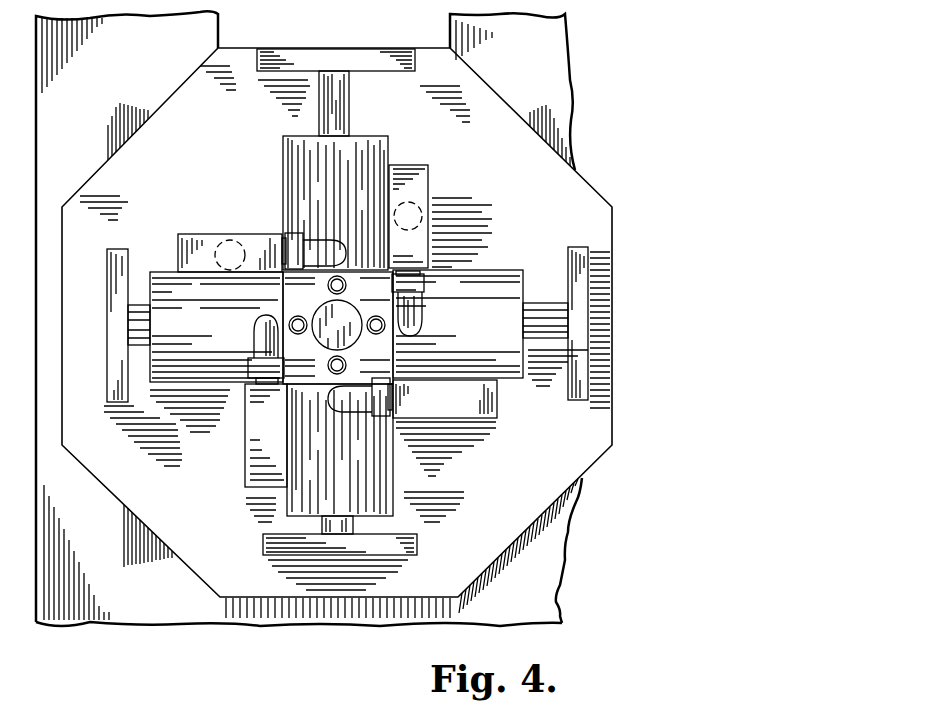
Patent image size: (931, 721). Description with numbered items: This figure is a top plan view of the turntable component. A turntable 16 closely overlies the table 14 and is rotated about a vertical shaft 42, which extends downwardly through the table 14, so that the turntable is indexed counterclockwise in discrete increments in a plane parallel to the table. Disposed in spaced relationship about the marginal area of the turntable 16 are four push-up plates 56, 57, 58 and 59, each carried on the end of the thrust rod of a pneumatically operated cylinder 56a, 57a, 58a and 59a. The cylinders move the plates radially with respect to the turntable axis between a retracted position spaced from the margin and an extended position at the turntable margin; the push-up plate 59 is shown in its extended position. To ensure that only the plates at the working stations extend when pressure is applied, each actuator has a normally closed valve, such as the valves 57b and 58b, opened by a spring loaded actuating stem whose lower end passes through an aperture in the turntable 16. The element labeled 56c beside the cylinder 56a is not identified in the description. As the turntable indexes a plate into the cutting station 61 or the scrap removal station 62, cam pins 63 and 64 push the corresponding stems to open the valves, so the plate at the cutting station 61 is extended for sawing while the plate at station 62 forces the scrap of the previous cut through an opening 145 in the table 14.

The table 14 is at (108, 567).
The turntable 16 is at (190, 449).
The vertical shaft 42 is at (346, 334).
The push-up plate 56 is at (114, 264).
The pneumatically operated cylinder 56a is at (224, 331).
The side block 56c is at (282, 441).
The push-up plate 57 is at (274, 536).
The pneumatically operated cylinder 57a is at (358, 461).
The normally closed valve 57b is at (454, 405).
The push-up plate 58 is at (574, 272).
The pneumatically operated cylinder 58a is at (474, 331).
The normally closed valve 58b is at (414, 180).
The push-up plate 59 is at (380, 64).
The pneumatically operated cylinder 59a is at (354, 199).
The cutting station 61 is at (636, 321).
The scrap removal station 62 is at (340, 40).
The cam pin 63 is at (425, 208).
The cam pin 64 is at (232, 238).
The opening 145 is at (216, 22).